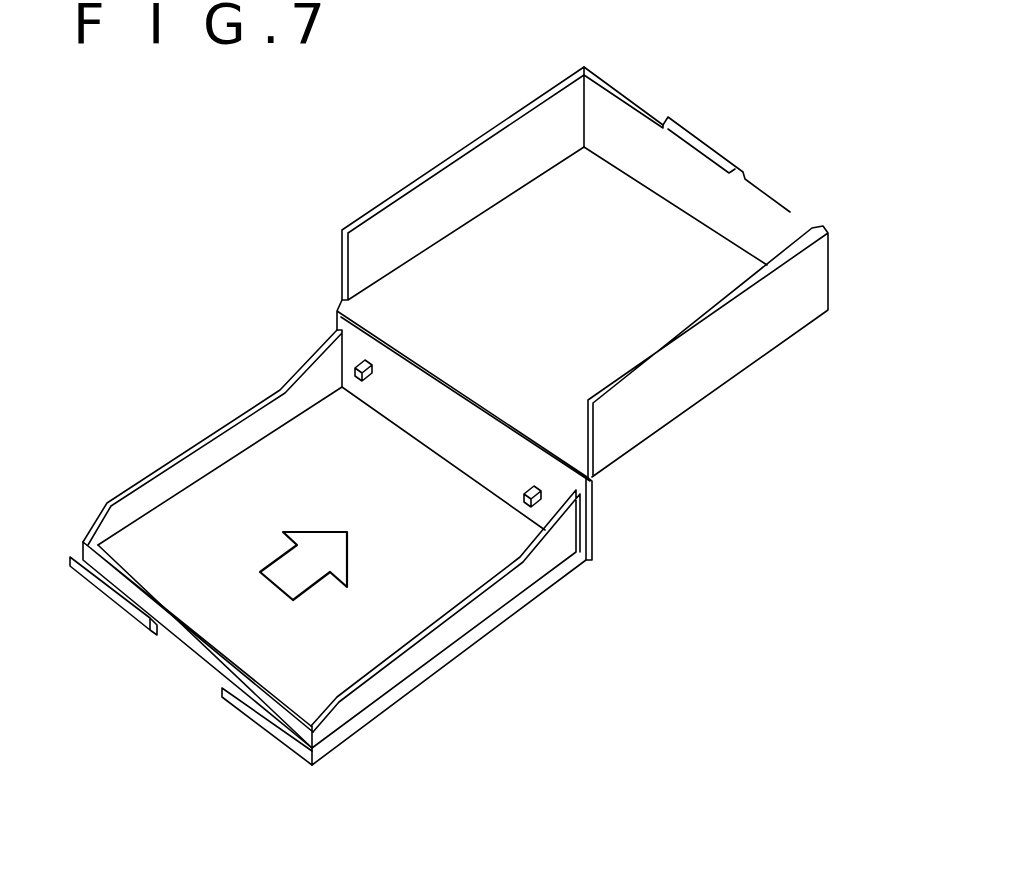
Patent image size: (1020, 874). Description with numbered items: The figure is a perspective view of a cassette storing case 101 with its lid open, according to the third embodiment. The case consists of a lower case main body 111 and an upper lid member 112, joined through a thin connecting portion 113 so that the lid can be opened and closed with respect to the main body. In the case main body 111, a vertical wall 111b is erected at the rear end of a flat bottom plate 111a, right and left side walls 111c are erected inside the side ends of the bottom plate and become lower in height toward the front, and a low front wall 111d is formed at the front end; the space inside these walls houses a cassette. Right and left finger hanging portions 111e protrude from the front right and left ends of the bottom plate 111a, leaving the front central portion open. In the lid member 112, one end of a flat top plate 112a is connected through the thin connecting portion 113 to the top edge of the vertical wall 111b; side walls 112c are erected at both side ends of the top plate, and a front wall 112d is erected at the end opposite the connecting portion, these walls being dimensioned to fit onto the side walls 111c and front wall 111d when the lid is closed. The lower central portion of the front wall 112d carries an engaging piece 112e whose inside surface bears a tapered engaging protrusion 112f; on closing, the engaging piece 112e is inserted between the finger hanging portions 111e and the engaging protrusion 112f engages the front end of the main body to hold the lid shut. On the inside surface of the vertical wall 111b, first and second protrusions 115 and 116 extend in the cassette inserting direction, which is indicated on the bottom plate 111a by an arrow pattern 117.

The cassette storing case 101 is at (448, 105).
The case main body 111 is at (480, 646).
The bottom plate 111a is at (328, 677).
The vertical wall 111b is at (427, 398).
The side walls 111c is at (207, 437).
The front wall 111d is at (143, 594).
The finger hanging portions 111e is at (98, 590).
The lid member 112 is at (716, 396).
The top plate 112a is at (588, 375).
The side walls 112c is at (388, 196).
The front wall 112d is at (623, 94).
The engaging piece 112e is at (723, 153).
The engaging protrusion 112f is at (680, 148).
The thin connecting portion 113 is at (506, 420).
The first protrusion 115 is at (358, 383).
The second protrusion 116 is at (520, 497).
The arrow pattern 117 is at (348, 553).